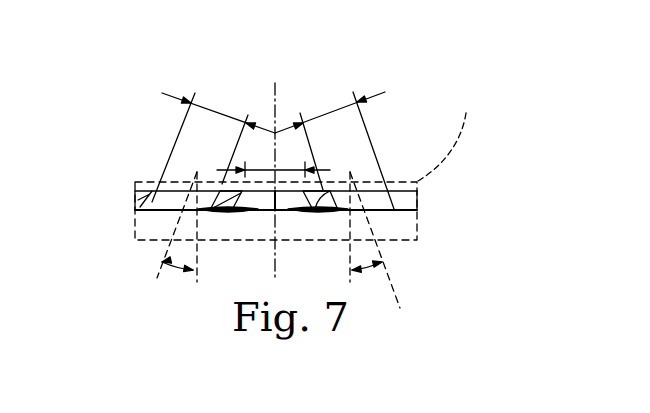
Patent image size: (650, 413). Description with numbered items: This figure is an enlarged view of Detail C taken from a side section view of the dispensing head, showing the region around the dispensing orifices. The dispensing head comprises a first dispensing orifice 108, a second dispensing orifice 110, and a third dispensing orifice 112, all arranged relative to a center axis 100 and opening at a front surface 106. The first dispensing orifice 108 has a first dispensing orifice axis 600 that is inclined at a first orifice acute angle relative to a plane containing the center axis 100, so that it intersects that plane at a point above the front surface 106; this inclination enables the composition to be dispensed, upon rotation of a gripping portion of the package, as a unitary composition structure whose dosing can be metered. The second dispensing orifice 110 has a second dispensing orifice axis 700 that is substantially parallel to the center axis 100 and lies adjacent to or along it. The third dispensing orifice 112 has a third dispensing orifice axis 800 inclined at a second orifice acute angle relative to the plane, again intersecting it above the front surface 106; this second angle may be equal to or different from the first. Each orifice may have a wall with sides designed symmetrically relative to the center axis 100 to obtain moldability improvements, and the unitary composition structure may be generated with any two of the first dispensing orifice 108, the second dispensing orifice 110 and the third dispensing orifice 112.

The center axis 100 is at (273, 130).
The second dispensing orifice axis 700 is at (273, 130).
The front surface 106 is at (138, 182).
The first dispensing orifice 108 is at (378, 207).
The second dispensing orifice 110 is at (269, 197).
The third dispensing orifice 112 is at (163, 204).
The third dispensing orifice axis 800 is at (195, 180).
The first dispensing orifice axis 600 is at (353, 181).
The Detail C is at (450, 127).